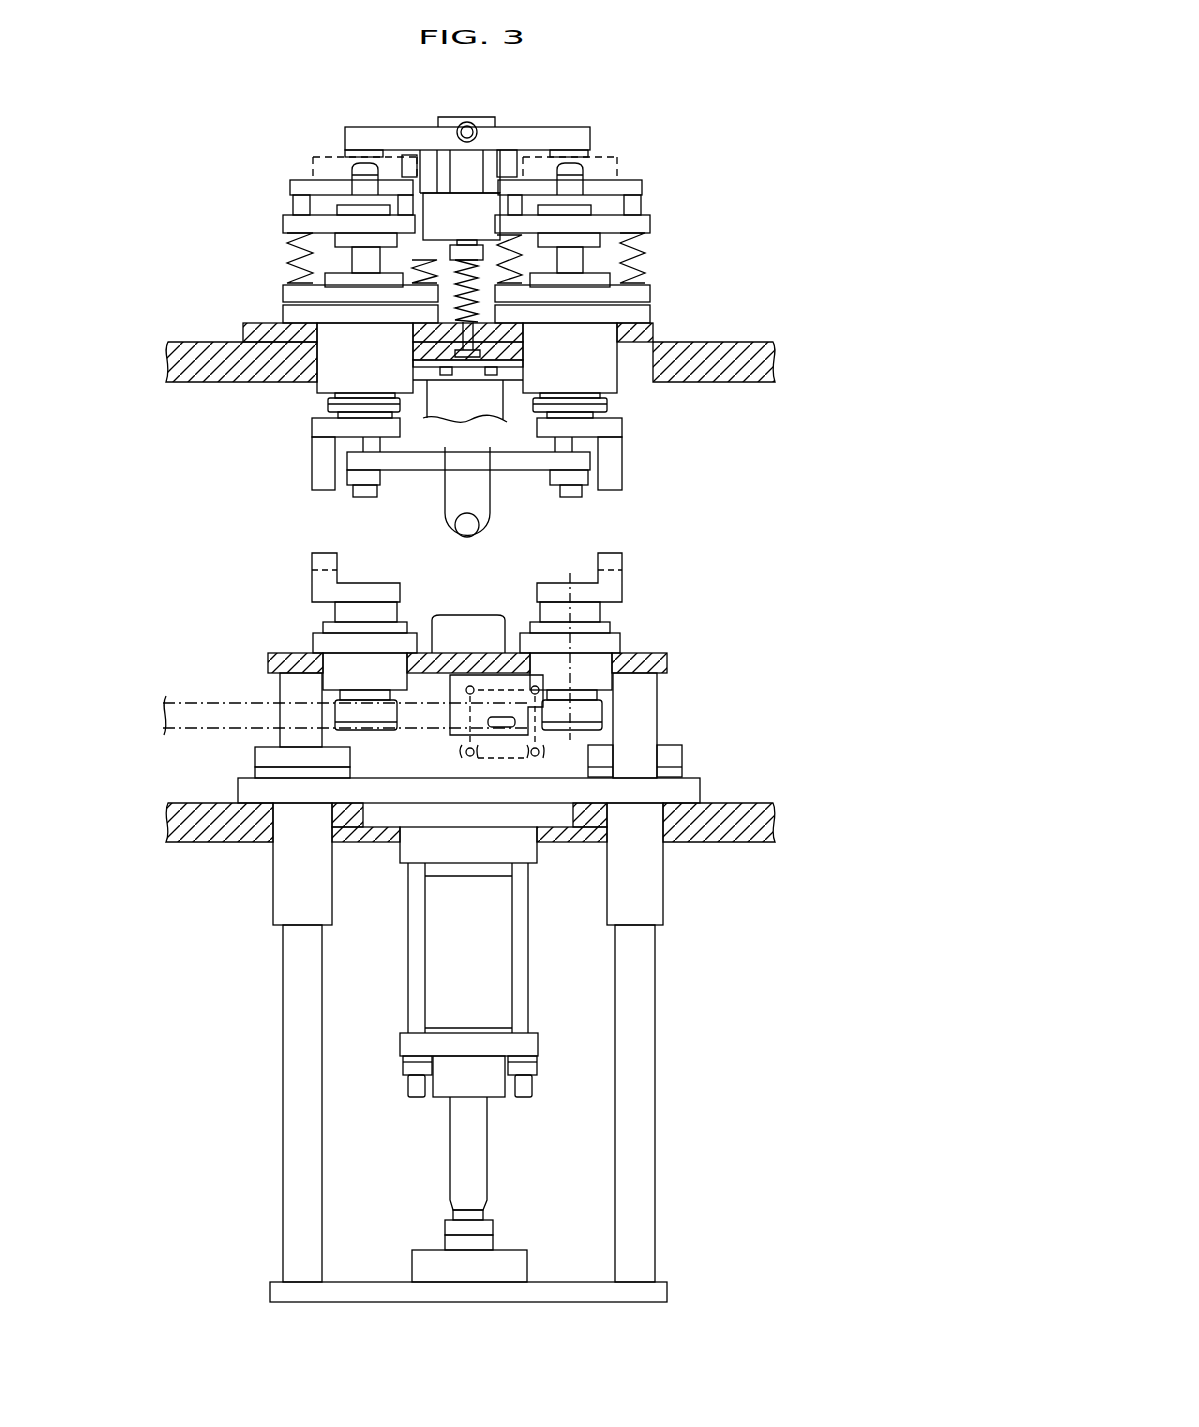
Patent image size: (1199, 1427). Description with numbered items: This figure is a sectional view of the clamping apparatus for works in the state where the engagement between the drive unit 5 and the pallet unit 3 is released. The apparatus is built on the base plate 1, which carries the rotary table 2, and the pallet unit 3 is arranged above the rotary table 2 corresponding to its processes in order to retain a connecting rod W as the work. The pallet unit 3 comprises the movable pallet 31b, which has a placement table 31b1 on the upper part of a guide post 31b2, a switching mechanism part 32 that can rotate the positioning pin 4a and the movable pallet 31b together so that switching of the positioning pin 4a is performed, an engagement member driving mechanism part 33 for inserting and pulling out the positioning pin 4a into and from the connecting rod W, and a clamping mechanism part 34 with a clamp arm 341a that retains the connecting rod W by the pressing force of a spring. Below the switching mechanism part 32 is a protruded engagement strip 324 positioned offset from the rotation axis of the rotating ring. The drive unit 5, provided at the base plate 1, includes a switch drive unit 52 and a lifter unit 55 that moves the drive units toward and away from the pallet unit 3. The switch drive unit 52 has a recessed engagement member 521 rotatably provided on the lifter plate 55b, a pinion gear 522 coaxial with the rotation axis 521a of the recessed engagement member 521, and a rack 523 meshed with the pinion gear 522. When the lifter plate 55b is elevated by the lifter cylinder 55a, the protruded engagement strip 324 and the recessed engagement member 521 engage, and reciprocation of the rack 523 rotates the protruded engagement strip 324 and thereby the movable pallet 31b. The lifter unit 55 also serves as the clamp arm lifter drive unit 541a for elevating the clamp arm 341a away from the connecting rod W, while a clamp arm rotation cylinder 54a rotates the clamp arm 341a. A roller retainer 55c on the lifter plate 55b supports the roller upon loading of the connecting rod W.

The connecting rod W is at (323, 157).
The clamp arm 341a is at (480, 112).
The clamping mechanism part 34 is at (577, 121).
The positioning pin 4a is at (583, 172).
The placement table 31b1 is at (632, 178).
The guide post 31b2 is at (645, 205).
The movable pallet 31b is at (895, 130).
The pallet unit 3 is at (712, 253).
The rotary table 2 is at (733, 384).
The switching mechanism part 32 is at (628, 448).
The protruded engagement strip 324 is at (620, 477).
The engagement member driving mechanism part 33 is at (575, 498).
The rotation axis 521a is at (570, 573).
The roller retainer 55c is at (452, 626).
The recessed engagement member 521 is at (623, 563).
The switch drive unit 52 is at (628, 598).
The rack 523 is at (222, 702).
The lifter plate 55b is at (668, 662).
The pinion gear 522 is at (565, 713).
The base plate 1 is at (772, 800).
The clamp arm rotation cylinder 54a is at (498, 760).
The drive unit 5 is at (678, 945).
The lifter cylinder 55a is at (503, 989).
The lifter unit 55 is at (660, 1160).
The clamp arm lifter drive unit 541a is at (610, 1052).